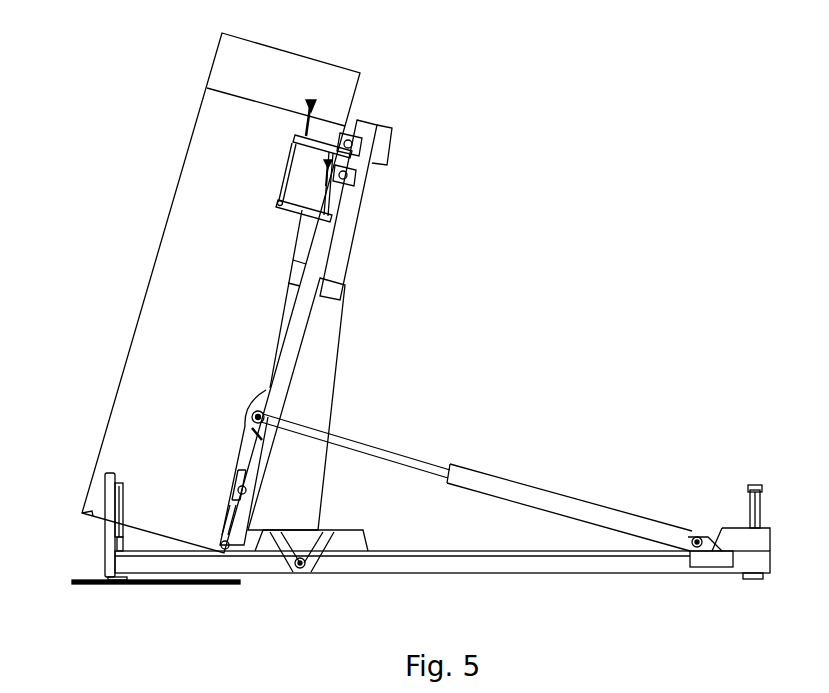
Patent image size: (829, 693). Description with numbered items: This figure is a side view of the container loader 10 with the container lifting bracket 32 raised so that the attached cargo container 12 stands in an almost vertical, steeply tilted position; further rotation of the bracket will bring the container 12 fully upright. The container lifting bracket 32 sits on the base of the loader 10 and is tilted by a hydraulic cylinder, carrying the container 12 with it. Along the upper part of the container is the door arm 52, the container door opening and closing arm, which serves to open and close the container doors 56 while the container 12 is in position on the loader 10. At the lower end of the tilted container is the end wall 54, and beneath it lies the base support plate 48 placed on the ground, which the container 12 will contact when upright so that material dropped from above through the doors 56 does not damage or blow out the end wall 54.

The container loader 10 is at (512, 298).
The cargo container 12 is at (155, 287).
The container lifting bracket 32 is at (330, 317).
The base support plate 48 is at (87, 586).
The door arm 52 is at (320, 103).
The end wall 54 is at (92, 512).
The container doors 56 is at (222, 67).